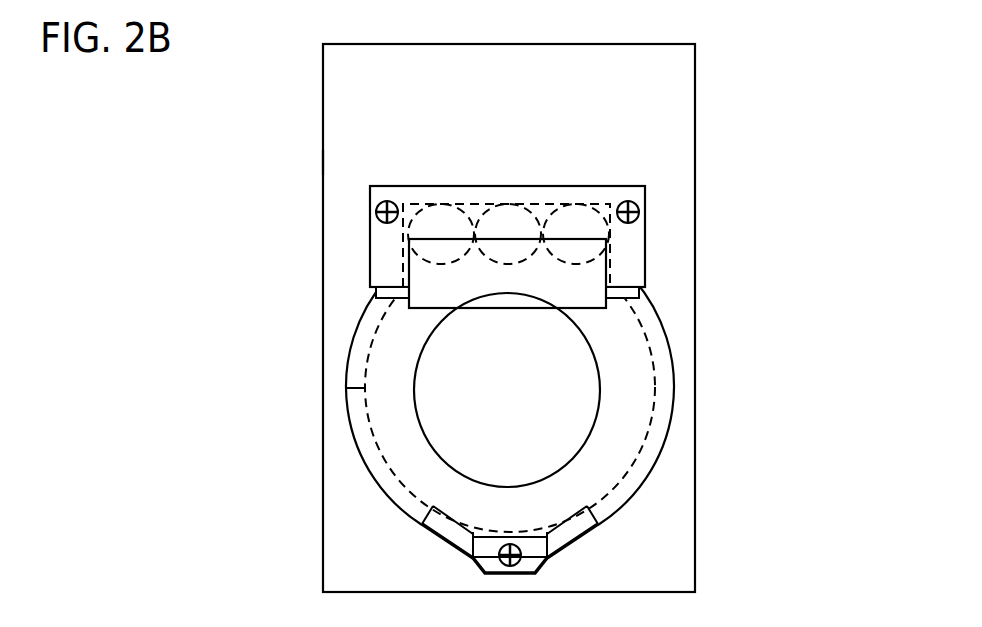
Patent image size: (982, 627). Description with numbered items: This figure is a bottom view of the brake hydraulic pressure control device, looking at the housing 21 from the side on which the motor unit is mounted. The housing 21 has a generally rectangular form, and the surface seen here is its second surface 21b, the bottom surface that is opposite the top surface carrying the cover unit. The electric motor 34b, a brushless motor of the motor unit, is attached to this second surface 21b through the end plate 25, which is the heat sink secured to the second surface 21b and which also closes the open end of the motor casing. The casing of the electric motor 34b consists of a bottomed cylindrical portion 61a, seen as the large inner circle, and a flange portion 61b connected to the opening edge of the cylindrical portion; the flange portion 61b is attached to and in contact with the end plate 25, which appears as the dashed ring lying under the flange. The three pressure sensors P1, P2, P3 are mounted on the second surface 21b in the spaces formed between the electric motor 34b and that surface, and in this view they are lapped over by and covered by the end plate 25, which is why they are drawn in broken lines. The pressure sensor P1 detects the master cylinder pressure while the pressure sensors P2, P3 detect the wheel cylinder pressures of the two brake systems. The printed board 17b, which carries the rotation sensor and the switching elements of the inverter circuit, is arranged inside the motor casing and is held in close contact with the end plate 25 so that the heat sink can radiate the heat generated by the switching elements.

The housing 21 is at (323, 256).
The second surface 21b is at (342, 162).
The printed board 17b is at (338, 385).
The pressure sensor P1 is at (504, 204).
The pressure sensor P2 is at (433, 204).
The pressure sensor P3 is at (577, 204).
The electric motor 34b is at (822, 252).
The end plate 25 is at (662, 346).
The flange portion 61b is at (671, 387).
The bottomed cylindrical portion 61a is at (585, 394).